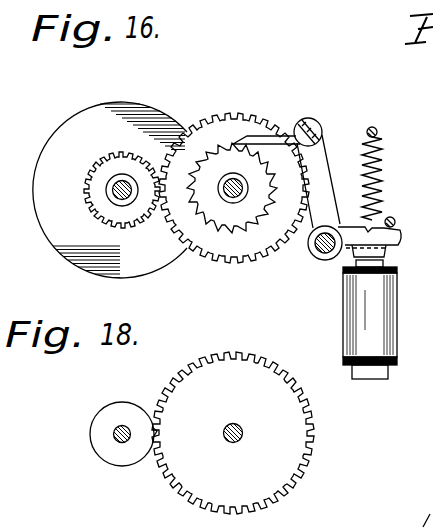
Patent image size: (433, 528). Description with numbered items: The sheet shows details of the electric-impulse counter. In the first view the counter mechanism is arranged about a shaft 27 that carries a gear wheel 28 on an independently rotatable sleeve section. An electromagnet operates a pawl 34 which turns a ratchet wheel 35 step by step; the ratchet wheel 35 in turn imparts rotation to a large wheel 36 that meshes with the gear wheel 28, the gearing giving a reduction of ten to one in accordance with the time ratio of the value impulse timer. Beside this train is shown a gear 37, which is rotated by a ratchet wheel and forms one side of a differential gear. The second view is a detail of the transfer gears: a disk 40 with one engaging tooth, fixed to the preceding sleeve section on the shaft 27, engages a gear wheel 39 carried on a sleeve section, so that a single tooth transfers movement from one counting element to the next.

In FIG. 16, the shaft 27 is at (117, 203).
In FIG. 18, the shaft 27 is at (122, 438).
In FIG. 16, the gear wheel 28 is at (92, 210).
In FIG. 16, the pawl 34 is at (278, 132).
In FIG. 16, the ratchet wheel 35 is at (236, 226).
In FIG. 16, the large wheel 36 is at (236, 112).
In FIG. 16, the gear 37 is at (390, 310).
In FIG. 18, the gear wheel 39 is at (310, 437).
In FIG. 18, the disk 40 is at (127, 460).